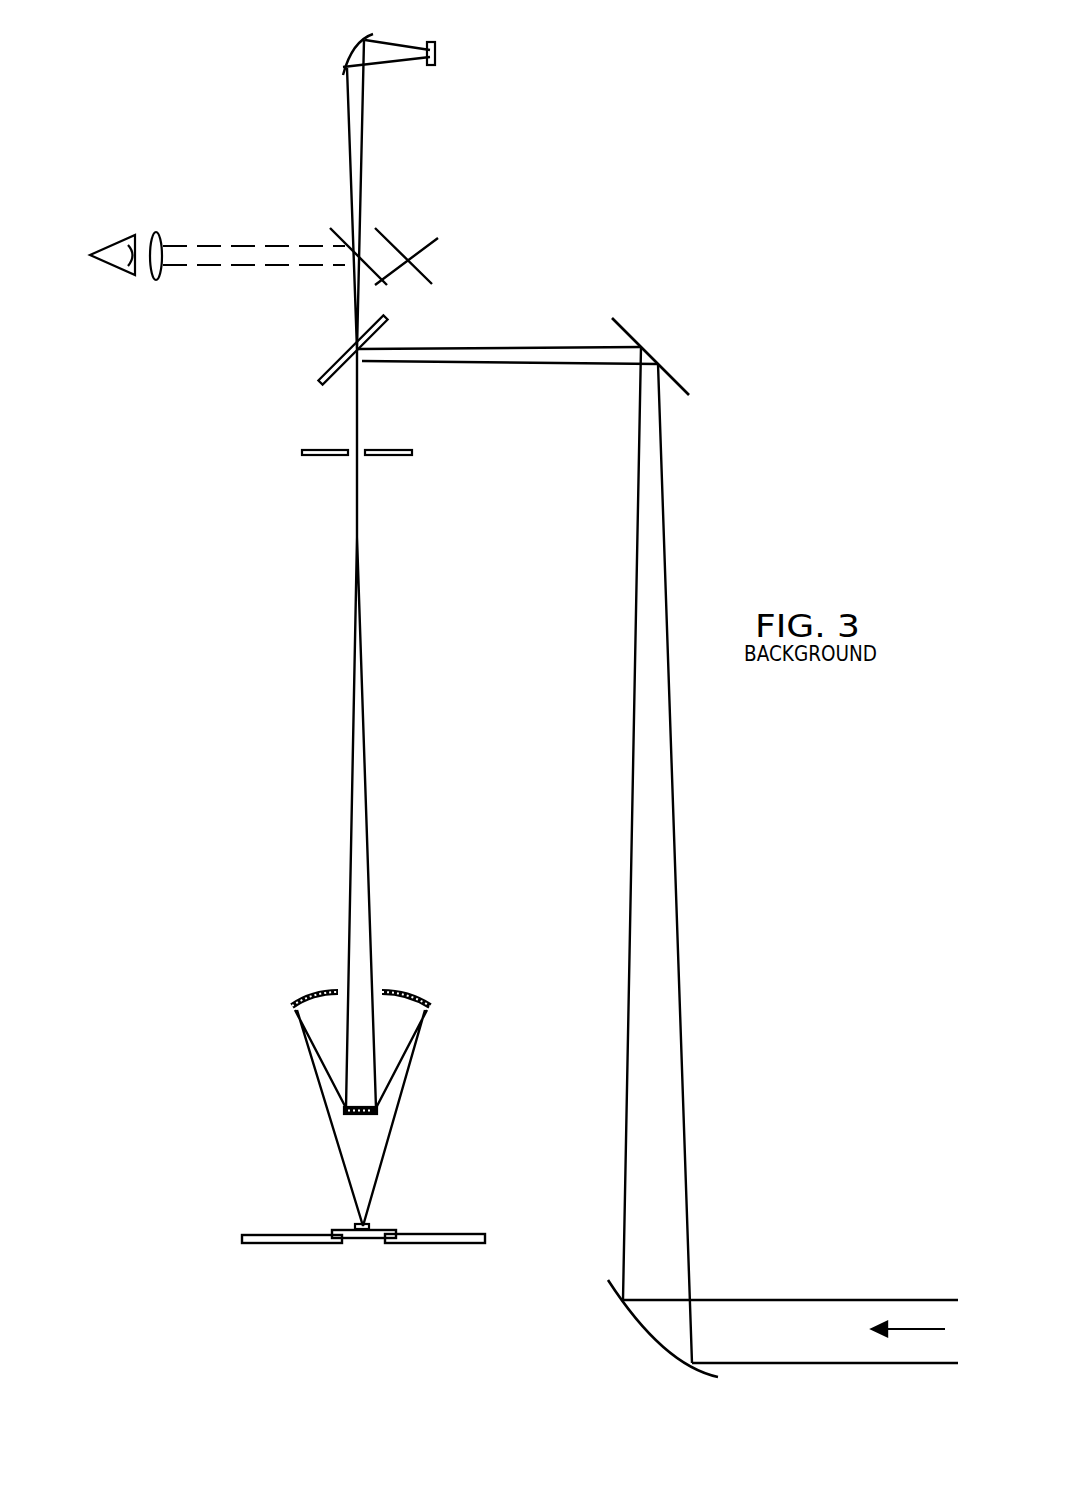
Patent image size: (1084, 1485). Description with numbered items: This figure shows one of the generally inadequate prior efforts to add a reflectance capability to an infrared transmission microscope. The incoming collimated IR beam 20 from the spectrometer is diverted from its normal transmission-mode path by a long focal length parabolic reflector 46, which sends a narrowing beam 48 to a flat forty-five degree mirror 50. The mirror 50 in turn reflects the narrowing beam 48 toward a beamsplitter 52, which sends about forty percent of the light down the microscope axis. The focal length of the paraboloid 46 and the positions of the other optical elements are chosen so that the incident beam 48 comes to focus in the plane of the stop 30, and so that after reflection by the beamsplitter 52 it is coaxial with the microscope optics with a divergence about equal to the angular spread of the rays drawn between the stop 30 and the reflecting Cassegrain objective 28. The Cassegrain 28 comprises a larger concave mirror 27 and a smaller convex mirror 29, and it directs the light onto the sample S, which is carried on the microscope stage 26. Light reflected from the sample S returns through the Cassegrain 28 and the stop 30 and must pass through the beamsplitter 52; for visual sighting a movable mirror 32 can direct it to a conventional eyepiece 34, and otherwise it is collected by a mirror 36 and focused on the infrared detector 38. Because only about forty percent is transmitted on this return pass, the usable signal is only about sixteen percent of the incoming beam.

The beam 20 is at (793, 1298).
The microscope stage 26 is at (466, 1244).
The concave mirror 27 is at (400, 991).
The reflecting Cassegrain objective 28 is at (336, 1084).
The convex mirror 29 is at (329, 1139).
The stop 30 is at (370, 457).
The movable mirror 32 is at (438, 238).
The eyepiece 34 is at (180, 227).
The mirror 36 is at (346, 70).
The infrared detector 38 is at (436, 64).
The parabolic reflector 46 is at (663, 1345).
The narrowing beam 48 is at (357, 403).
The flat 45° mirror 50 is at (672, 381).
The beamsplitter 52 is at (388, 335).
The sample S is at (367, 1227).